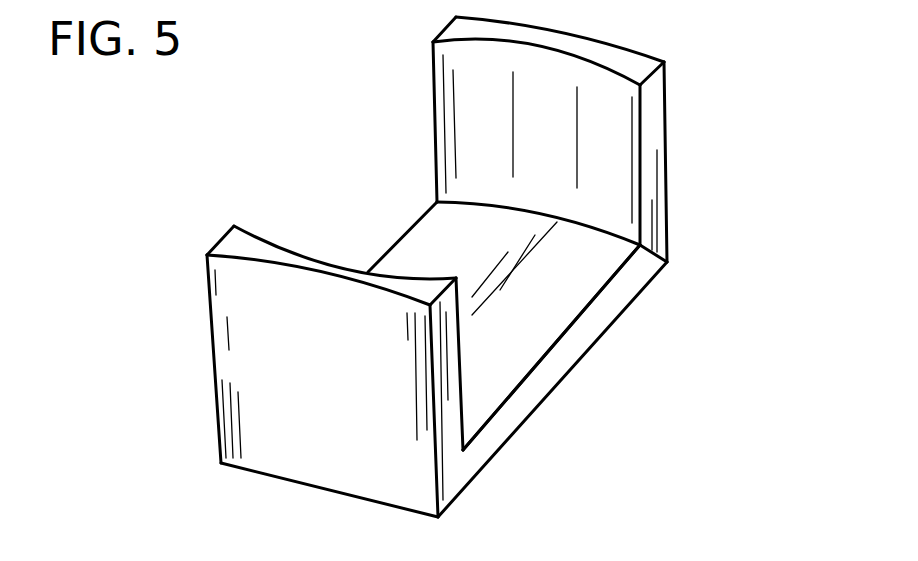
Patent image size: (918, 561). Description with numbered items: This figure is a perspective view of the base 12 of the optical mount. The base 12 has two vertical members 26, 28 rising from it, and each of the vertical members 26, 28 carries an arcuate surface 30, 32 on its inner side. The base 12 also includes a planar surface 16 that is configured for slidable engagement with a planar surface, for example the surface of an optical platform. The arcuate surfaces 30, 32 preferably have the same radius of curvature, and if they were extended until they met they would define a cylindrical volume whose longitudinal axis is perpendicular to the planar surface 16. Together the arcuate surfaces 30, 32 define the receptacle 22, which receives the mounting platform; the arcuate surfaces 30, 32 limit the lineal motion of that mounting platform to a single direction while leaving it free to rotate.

The base 12 is at (248, 409).
The surface 16 is at (553, 388).
The receptacle 22 is at (432, 233).
The vertical member 26 is at (222, 240).
The vertical member 28 is at (563, 34).
The arcuate surface 30 is at (303, 253).
The arcuate surface 32 is at (605, 132).